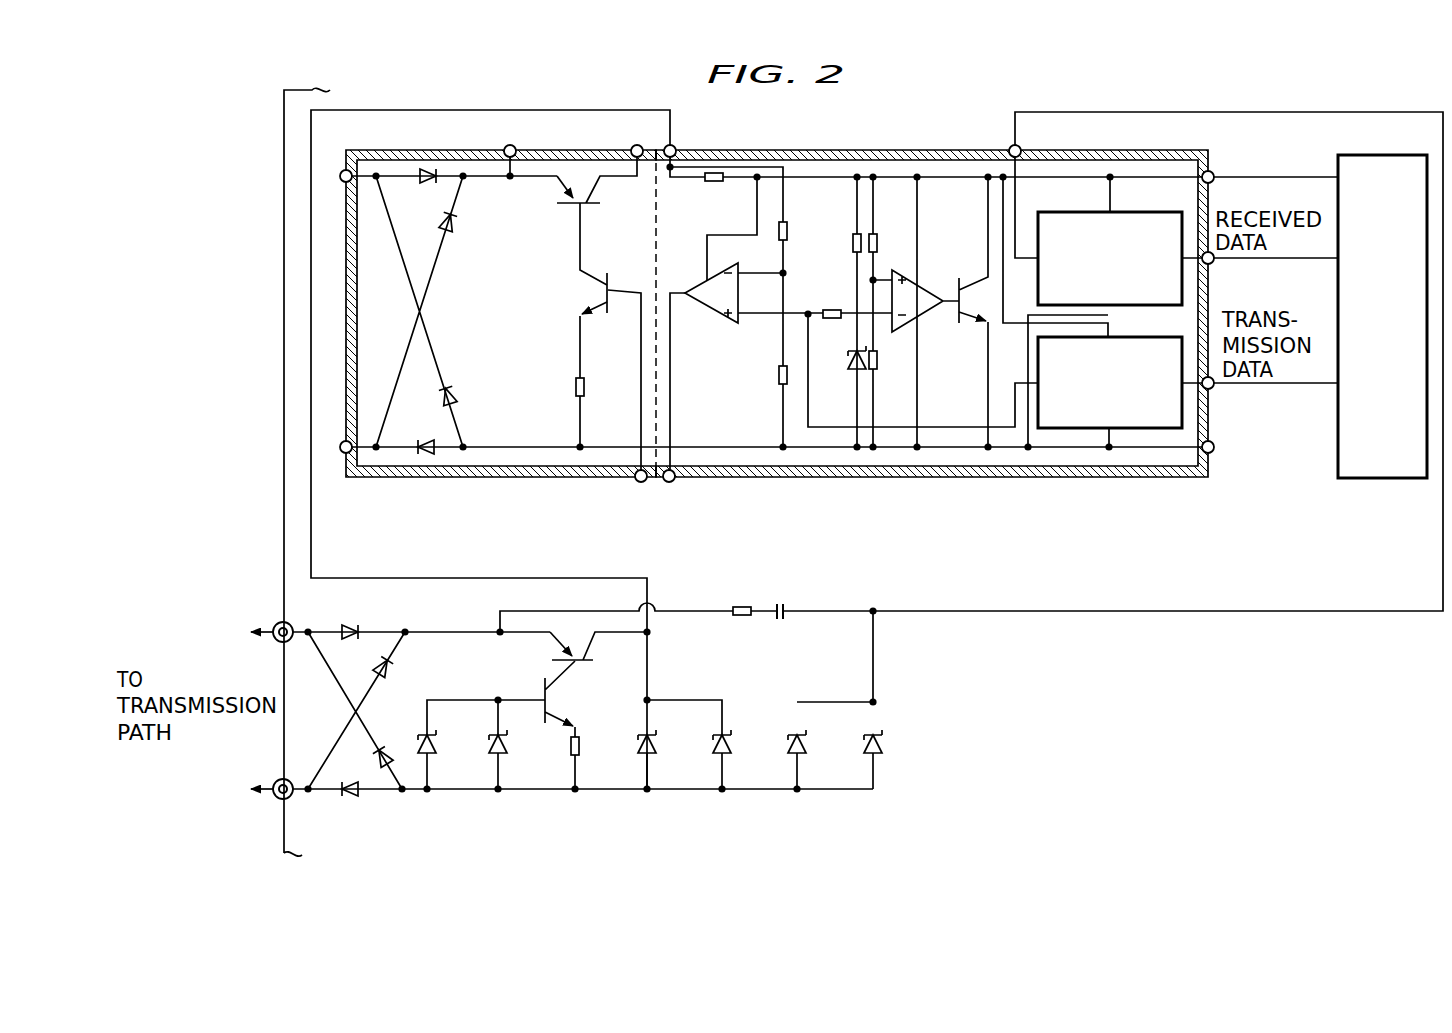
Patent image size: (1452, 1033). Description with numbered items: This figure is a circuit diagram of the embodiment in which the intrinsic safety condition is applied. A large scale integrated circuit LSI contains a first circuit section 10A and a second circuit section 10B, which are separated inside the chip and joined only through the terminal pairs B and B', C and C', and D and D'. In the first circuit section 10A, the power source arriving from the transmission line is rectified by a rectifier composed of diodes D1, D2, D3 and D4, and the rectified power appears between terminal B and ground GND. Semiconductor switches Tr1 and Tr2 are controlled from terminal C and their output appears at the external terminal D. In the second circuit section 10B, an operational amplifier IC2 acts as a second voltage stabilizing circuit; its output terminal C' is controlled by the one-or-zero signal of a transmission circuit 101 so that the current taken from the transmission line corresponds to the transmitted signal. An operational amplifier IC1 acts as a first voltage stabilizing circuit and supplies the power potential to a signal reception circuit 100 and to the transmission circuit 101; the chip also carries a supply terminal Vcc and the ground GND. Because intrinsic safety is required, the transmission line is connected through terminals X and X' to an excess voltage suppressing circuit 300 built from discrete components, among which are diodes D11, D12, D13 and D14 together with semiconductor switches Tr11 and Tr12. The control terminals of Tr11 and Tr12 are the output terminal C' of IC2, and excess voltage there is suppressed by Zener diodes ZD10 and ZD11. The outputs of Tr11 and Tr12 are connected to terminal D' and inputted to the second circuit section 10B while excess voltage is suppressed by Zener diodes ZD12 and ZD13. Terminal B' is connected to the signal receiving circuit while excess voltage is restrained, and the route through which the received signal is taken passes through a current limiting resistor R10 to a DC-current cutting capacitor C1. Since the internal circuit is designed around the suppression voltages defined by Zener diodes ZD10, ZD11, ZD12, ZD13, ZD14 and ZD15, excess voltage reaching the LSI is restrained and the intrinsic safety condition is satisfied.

The first circuit section 10A is at (462, 478).
The second circuit section 10B is at (845, 478).
The signal reception circuit 100 is at (1127, 207).
The signal transmission circuit 101 is at (1127, 332).
The excess voltage suppressing circuit 300 is at (344, 838).
The element LSI is at (1150, 478).
The rectifier diode D1 is at (427, 191).
The rectifier diode D2 is at (462, 229).
The rectifier diode D3 is at (464, 394).
The rectifier diode D4 is at (426, 431).
The semiconductor switch Tr1 is at (598, 221).
The semiconductor switch Tr2 is at (591, 371).
The operational amplifier IC1 is at (930, 292).
The operational amplifier IC2 is at (708, 316).
The terminal B is at (515, 141).
The external terminal D is at (629, 141).
The terminal D' is at (683, 141).
The terminal B' is at (1026, 139).
The terminal C is at (640, 490).
The output terminal C' is at (678, 490).
The supply voltage terminal Vcc is at (1227, 168).
The ground GND is at (1232, 437).
The terminal X is at (282, 622).
The terminal X' is at (281, 776).
The diode D11 is at (356, 618).
The diode D12 is at (401, 677).
The diode D13 is at (393, 745).
The diode D14 is at (350, 774).
The semiconductor switch Tr11 is at (598, 649).
The semiconductor switch Tr12 is at (580, 725).
The Zener diode ZD10 is at (449, 759).
The Zener diode ZD11 is at (521, 759).
The Zener diode ZD12 is at (671, 759).
The Zener diode ZD13 is at (745, 759).
The Zener diode ZD14 is at (821, 759).
The Zener diode ZD15 is at (897, 759).
The current limiting resistor R10 is at (744, 598).
The DC-current cutting capacitor C1 is at (793, 600).